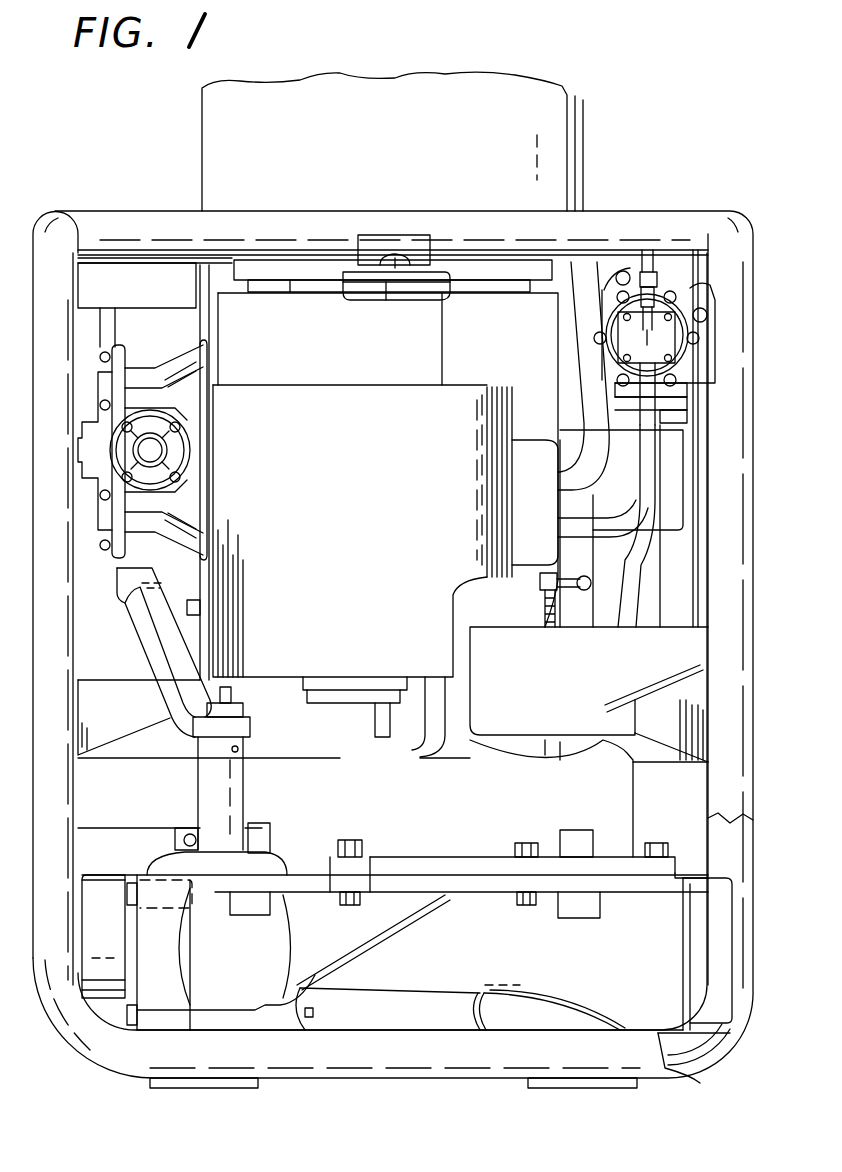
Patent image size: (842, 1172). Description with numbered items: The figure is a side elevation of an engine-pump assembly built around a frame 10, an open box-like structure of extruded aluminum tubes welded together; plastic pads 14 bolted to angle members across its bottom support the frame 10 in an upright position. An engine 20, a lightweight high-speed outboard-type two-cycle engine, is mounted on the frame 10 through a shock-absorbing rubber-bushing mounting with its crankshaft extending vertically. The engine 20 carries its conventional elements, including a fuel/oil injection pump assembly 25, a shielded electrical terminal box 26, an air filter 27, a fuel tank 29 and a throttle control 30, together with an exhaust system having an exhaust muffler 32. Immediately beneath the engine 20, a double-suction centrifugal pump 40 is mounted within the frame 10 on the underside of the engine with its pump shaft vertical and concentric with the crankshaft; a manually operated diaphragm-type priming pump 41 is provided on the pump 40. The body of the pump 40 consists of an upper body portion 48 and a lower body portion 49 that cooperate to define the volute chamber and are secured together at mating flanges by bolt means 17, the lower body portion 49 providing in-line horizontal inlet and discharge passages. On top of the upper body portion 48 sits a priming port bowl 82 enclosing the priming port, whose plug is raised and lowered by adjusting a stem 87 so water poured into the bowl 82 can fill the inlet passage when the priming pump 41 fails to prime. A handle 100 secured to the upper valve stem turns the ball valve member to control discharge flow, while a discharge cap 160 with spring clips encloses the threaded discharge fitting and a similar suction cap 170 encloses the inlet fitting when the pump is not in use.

The frame 10 is at (731, 205).
The plastic pads 14 is at (247, 1083).
The bolt means 17 is at (357, 840).
The engine 20 is at (555, 230).
The fuel/oil injection pump assembly 25 is at (605, 352).
The shielded electrical terminal box 26 is at (117, 327).
The air filter 27 is at (488, 423).
The fuel tank 29 is at (455, 82).
The throttle control 30 is at (123, 272).
The exhaust muffler 32 is at (688, 590).
The centrifugal pump 40 is at (328, 748).
The priming pump 41 is at (187, 442).
The upper body portion 48 is at (315, 801).
The lower body portion 49 is at (488, 975).
The priming port bowl 82 is at (590, 703).
The stem 87 is at (543, 608).
The handle 100 is at (170, 655).
The discharge cap 160 is at (89, 1003).
The suction cap 170 is at (714, 1015).